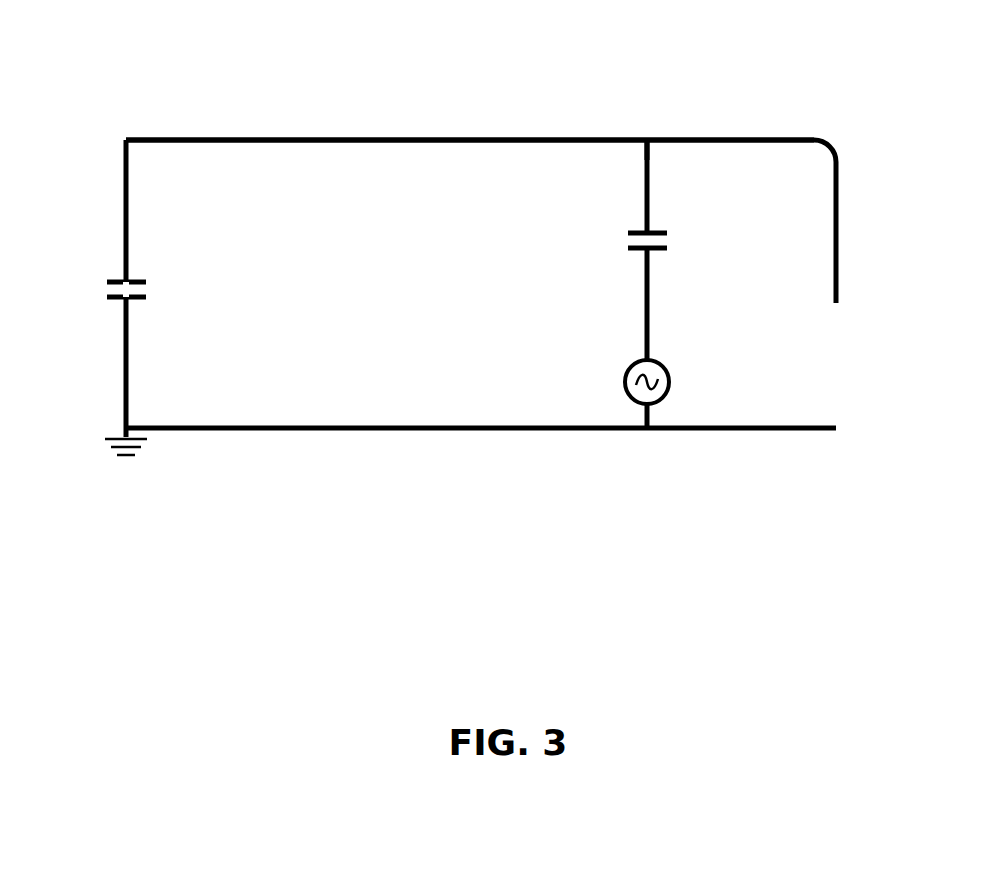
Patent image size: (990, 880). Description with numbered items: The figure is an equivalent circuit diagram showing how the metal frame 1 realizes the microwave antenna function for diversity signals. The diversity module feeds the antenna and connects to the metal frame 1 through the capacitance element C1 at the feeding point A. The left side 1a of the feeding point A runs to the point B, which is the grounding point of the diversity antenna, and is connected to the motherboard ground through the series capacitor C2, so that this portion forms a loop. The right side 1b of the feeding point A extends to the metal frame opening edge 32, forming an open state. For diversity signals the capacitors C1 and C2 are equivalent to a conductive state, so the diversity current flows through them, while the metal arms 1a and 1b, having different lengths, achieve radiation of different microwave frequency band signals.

The metal frame 1 is at (568, 72).
The left side of the feeding point 1a is at (538, 140).
The right side of the feeding point 1b is at (690, 140).
The feeding point A is at (650, 145).
The grounding point of the diversity antenna B is at (126, 140).
The high-capacity capacitor C1 is at (628, 284).
The high-capacity capacitor C2 is at (102, 290).
The metal frame opening edge 32 is at (830, 378).